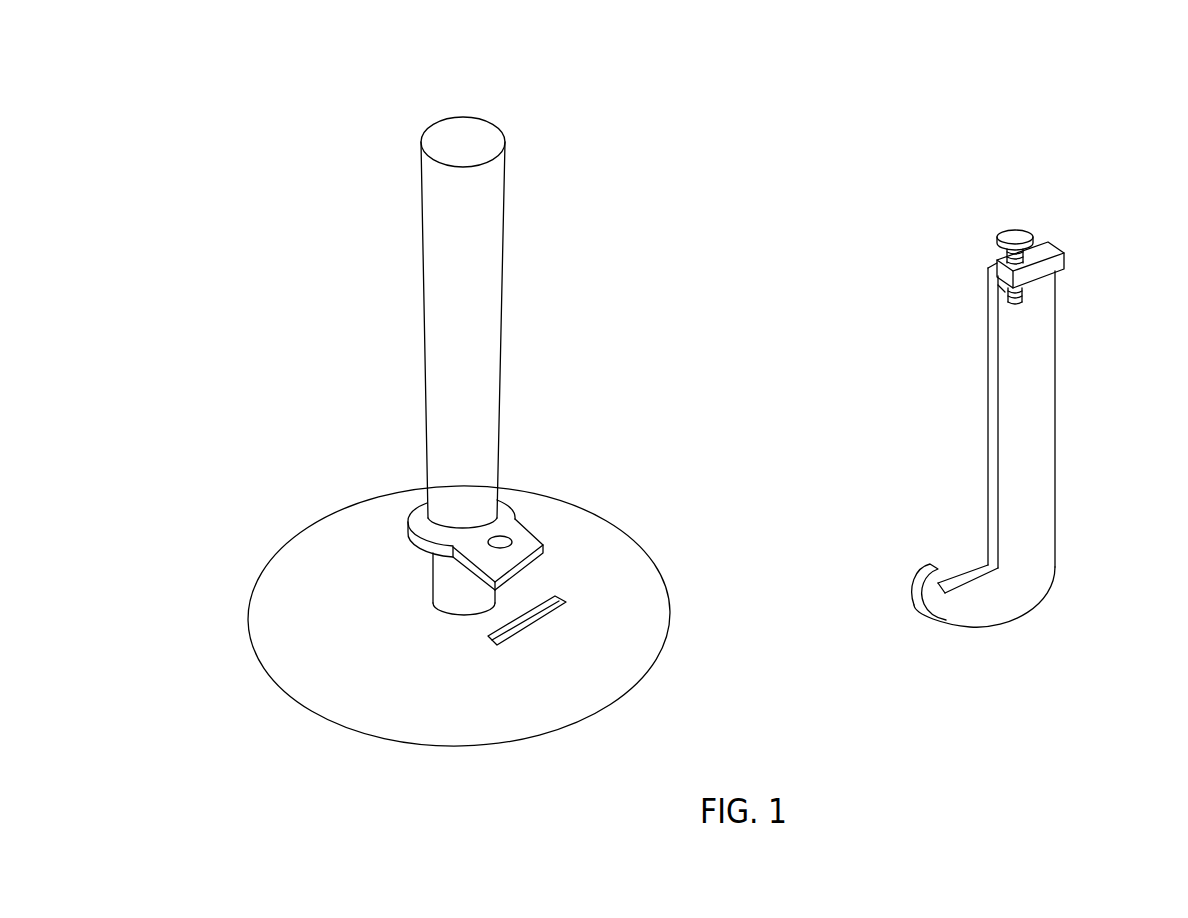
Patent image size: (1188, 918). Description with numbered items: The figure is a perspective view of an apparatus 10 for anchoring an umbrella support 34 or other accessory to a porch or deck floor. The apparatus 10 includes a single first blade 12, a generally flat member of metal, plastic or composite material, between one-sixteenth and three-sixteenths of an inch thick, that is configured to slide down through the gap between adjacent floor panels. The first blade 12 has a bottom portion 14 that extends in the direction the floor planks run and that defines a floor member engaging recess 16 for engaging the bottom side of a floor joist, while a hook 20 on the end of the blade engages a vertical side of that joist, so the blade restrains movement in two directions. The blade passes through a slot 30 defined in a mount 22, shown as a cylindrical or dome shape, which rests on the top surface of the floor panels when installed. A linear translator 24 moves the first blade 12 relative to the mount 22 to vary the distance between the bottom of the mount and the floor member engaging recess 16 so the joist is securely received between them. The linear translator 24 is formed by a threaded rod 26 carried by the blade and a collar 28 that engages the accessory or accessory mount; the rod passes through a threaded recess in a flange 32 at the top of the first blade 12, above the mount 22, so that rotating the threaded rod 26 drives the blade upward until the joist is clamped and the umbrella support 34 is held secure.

The apparatus 10 is at (754, 72).
The first blade 12 is at (1076, 443).
The bottom portion 14 is at (963, 653).
The floor member engaging recess 16 is at (981, 585).
The hook 20 is at (898, 583).
The mount 22 is at (328, 510).
The linear translator 24 is at (984, 233).
The threaded rod 26 is at (1033, 294).
The collar 28 is at (510, 502).
The slot 30 is at (562, 617).
The flange 32 is at (1057, 245).
The umbrella support 34 is at (425, 325).